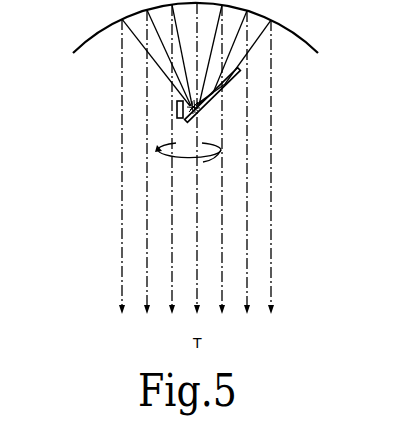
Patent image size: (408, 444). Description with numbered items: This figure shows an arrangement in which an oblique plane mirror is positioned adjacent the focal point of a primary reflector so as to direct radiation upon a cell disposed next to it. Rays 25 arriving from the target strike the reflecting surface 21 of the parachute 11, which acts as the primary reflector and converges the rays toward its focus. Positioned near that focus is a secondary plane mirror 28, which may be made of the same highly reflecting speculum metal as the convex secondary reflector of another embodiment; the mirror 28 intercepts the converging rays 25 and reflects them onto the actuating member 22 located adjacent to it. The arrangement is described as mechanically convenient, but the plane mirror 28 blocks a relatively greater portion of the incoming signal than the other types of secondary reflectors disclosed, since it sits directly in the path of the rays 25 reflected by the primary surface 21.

The parachute 11 is at (98, 23).
The reflecting surface 21 is at (147, 11).
The actuating member 22 is at (176, 108).
The rays 25 is at (188, 148).
The secondary plane mirror 28 is at (229, 75).